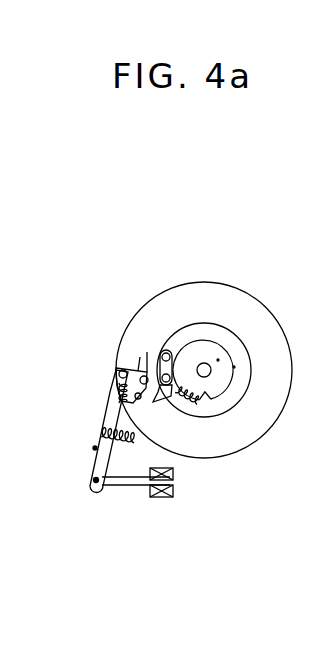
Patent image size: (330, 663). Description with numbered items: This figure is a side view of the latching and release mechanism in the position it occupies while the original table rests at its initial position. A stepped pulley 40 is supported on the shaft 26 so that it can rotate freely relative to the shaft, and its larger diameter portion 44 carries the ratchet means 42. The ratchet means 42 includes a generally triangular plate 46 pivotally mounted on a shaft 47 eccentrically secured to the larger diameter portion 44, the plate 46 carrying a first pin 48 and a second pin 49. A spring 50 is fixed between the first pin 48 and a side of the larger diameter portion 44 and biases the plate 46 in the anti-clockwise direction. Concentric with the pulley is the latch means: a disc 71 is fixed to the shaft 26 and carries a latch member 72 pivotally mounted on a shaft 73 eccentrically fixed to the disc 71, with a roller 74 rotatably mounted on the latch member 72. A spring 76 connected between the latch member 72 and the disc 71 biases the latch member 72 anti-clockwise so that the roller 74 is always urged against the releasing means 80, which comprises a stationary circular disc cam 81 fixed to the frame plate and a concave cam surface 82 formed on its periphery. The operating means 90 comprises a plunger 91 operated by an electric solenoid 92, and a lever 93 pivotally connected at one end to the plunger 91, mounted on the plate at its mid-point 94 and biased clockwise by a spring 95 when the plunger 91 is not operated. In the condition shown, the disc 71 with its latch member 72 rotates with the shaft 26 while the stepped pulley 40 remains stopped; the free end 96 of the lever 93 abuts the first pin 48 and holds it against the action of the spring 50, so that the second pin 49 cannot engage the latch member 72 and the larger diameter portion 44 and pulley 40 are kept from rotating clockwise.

The shaft 26 is at (200, 363).
The stepped pulley 40 is at (137, 303).
The ratchet means 42 is at (130, 364).
The larger diameter portion 44 is at (227, 308).
The generally triangular plate 46 is at (117, 366).
The shaft 47 is at (140, 358).
The first pin 48 is at (118, 372).
The second pin 49 is at (137, 401).
The spring 50 is at (130, 400).
The disc 71 is at (198, 338).
The latch member 72 is at (160, 393).
The shaft 73 is at (166, 352).
The roller 74 is at (148, 353).
The spring 76 is at (184, 399).
The releasing means 80 is at (234, 367).
The stationary circular disc cam 81 is at (218, 360).
The concave cam surface 82 is at (205, 396).
The operating means 90 is at (223, 370).
The plunger 91 is at (120, 483).
The electric solenoid 92 is at (153, 490).
The lever 93 is at (114, 393).
The mid-point 94 is at (92, 452).
The spring 95 is at (100, 437).
The free end 96 is at (118, 377).